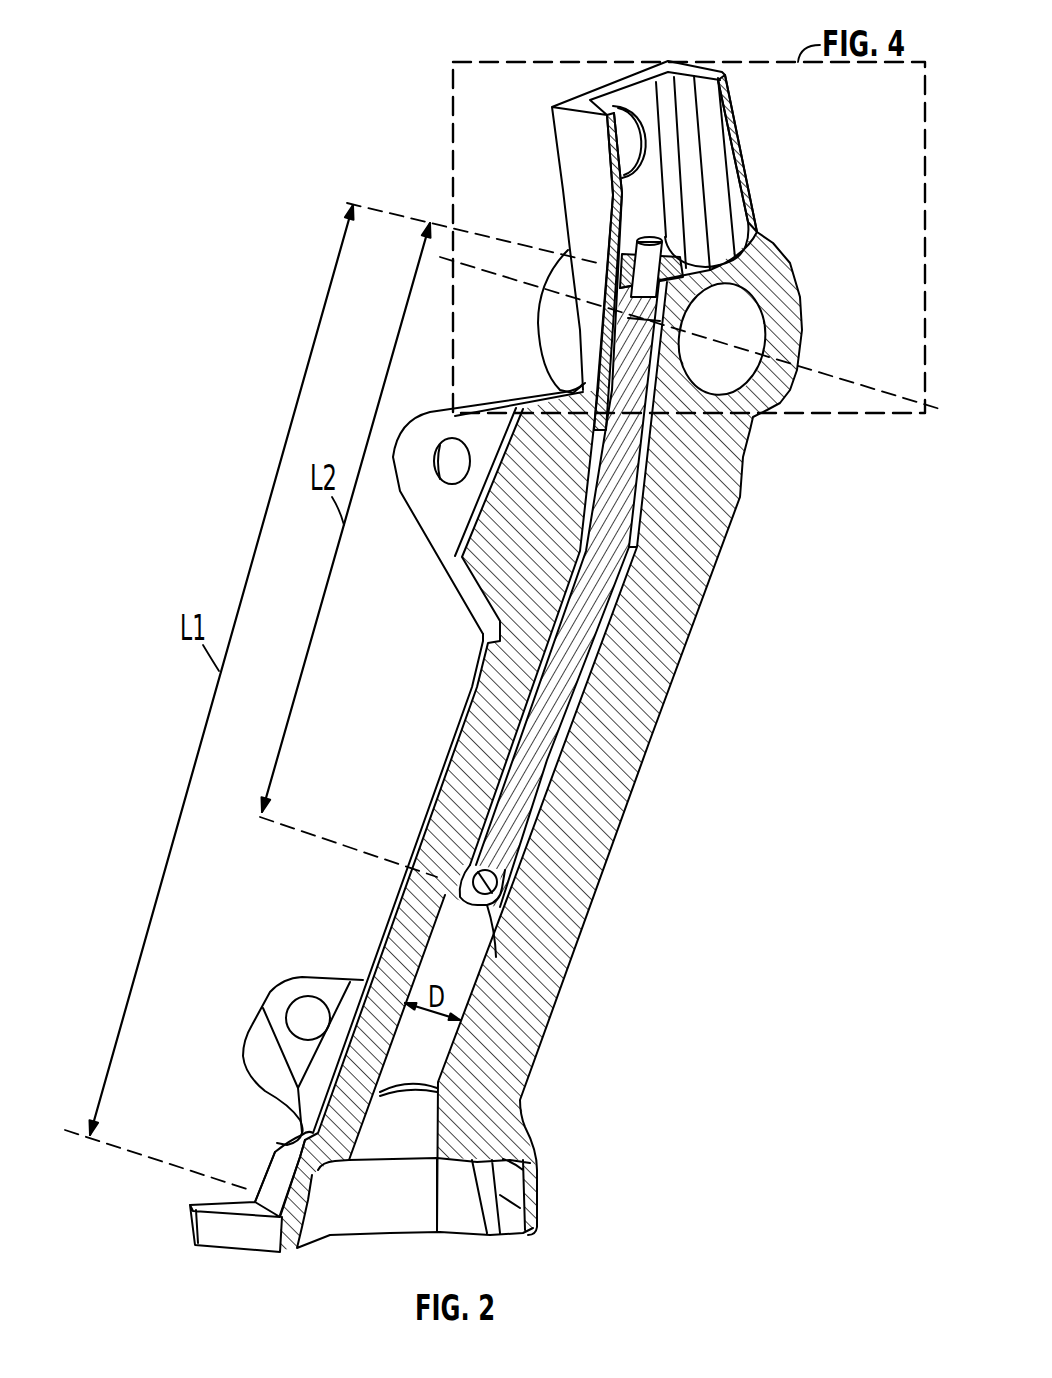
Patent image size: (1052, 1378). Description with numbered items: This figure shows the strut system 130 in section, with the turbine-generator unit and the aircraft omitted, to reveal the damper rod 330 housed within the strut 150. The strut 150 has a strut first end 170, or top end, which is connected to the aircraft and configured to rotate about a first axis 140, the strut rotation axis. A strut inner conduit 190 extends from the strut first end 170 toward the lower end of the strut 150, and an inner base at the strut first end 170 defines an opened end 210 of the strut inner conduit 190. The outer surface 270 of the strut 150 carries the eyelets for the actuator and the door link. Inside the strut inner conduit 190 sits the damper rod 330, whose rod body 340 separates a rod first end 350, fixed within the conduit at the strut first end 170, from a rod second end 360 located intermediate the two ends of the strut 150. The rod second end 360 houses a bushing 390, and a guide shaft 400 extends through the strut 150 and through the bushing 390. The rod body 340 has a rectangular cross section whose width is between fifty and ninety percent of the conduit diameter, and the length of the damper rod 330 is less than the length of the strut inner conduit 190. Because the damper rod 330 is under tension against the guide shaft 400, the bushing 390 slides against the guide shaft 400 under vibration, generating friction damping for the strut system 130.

The strut system 130 is at (132, 30).
The first axis 140 is at (843, 374).
The strut 150 is at (613, 812).
The strut first end 170 is at (733, 128).
The strut inner conduit 190 is at (612, 610).
The opened end 210 is at (680, 248).
The outer surface 270 is at (532, 1062).
The damper rod 330 is at (520, 787).
The rod body 340 is at (540, 702).
The rod first end 350 is at (678, 293).
The rod second end 360 is at (520, 856).
The bushing 390 is at (545, 993).
The guide shaft 400 is at (518, 898).